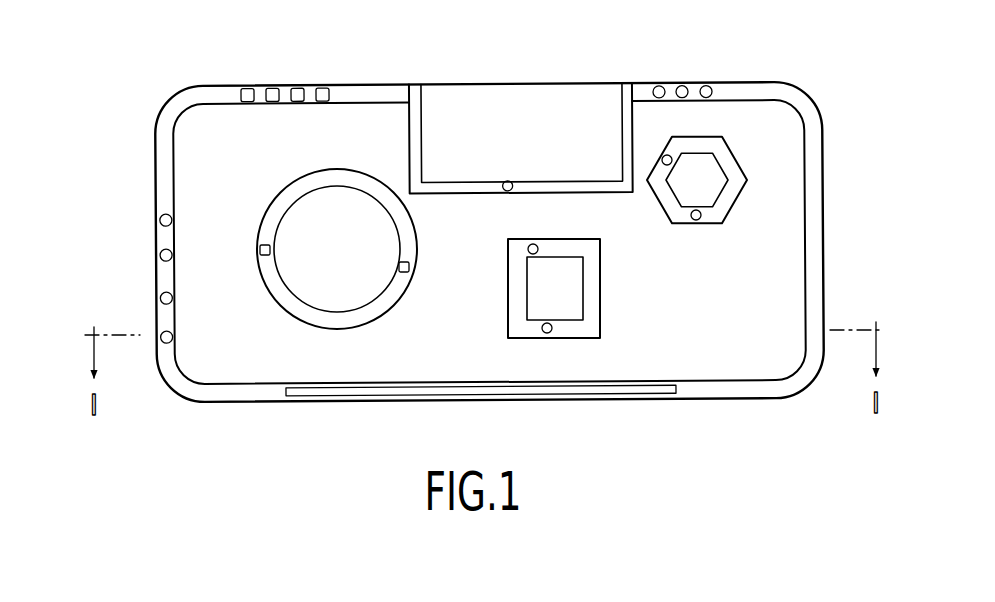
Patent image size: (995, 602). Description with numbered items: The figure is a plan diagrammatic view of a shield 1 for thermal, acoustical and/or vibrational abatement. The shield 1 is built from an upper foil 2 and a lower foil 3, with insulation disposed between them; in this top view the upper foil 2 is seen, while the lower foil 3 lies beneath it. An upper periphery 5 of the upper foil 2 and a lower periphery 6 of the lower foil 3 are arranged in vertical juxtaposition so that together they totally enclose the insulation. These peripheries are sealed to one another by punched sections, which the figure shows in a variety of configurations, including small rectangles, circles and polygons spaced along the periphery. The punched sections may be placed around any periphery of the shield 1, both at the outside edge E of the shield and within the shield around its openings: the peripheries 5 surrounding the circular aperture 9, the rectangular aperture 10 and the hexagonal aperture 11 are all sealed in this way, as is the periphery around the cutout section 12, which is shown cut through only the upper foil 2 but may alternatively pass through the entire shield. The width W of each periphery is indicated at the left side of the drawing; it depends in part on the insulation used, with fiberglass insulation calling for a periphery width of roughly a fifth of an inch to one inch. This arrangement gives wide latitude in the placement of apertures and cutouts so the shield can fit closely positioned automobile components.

The shield 1 is at (347, 130).
The upper foil 2 is at (239, 168).
The lower foil 3 is at (711, 404).
The upper periphery 5 is at (450, 182).
The lower periphery 6 is at (241, 406).
The aperture 9 is at (372, 230).
The aperture 10 is at (575, 278).
The aperture 11 is at (698, 168).
The cutout section 12 is at (477, 120).
The width of the periphery W is at (210, 182).
The outside edge E is at (830, 308).